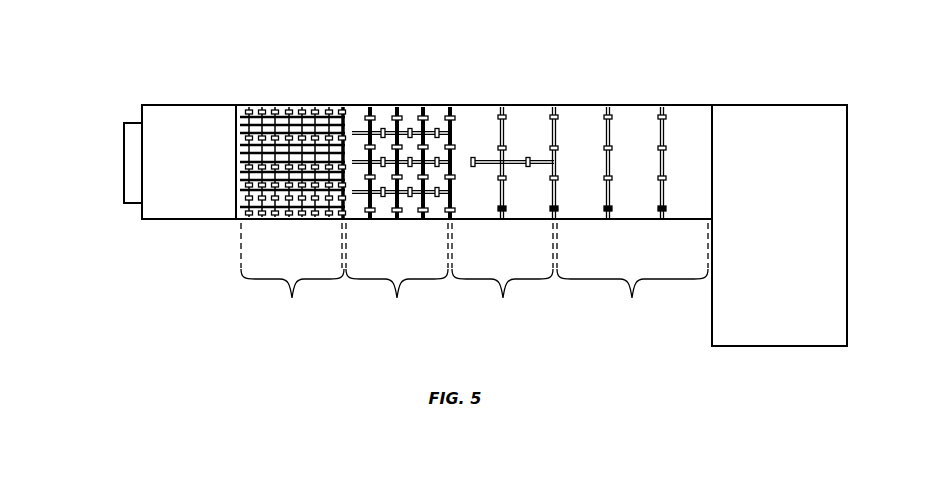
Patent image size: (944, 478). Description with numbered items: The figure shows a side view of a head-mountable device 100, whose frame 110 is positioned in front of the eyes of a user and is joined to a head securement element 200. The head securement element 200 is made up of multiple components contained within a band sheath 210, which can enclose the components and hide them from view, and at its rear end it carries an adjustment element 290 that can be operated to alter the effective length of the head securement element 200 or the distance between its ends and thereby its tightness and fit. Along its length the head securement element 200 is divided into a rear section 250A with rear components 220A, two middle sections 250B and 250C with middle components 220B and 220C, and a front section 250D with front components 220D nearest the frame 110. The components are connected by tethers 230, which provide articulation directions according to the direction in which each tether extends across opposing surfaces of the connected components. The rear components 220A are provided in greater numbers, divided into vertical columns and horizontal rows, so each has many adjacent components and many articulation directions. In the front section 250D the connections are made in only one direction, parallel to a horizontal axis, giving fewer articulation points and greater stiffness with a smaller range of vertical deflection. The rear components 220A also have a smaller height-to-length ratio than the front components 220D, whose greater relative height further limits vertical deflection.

The head-mountable device 100 is at (117, 68).
The frame 110 is at (778, 105).
The head securement element 200 is at (185, 105).
The band sheath 210 is at (242, 105).
The rear components 220A is at (287, 106).
The middle components 220B is at (440, 117).
The middle components 220C is at (486, 115).
The front components 220D is at (645, 113).
The tether 230 is at (450, 222).
The rear section 250A is at (293, 273).
The middle section 250B is at (399, 273).
The middle section 250C is at (504, 273).
The front section 250D is at (632, 273).
The adjustment element 290 is at (124, 163).